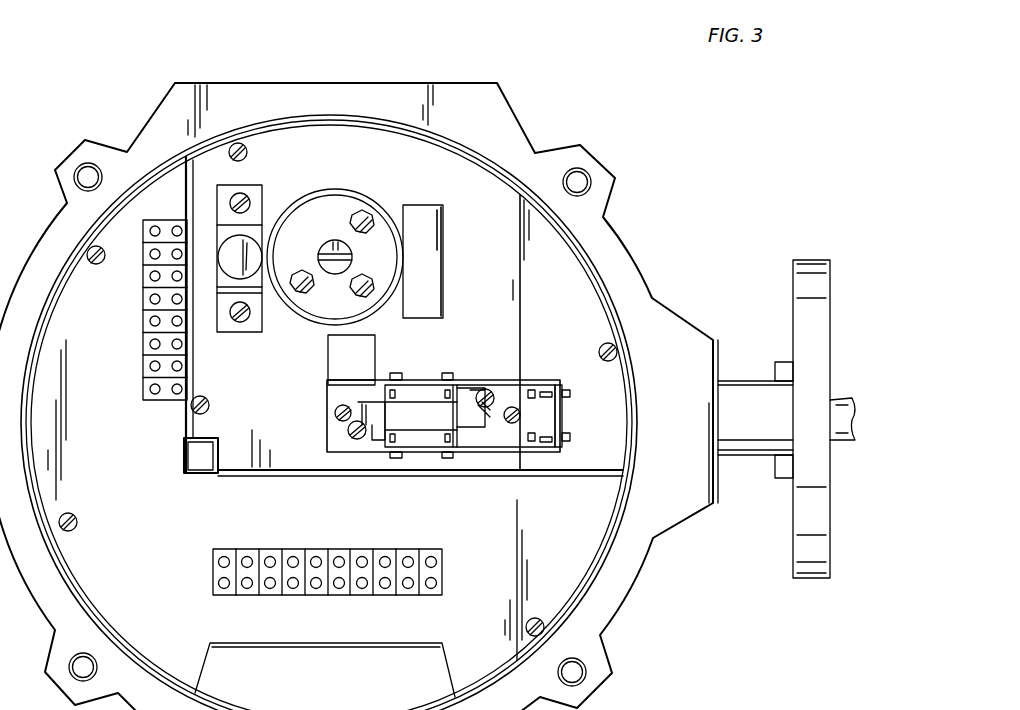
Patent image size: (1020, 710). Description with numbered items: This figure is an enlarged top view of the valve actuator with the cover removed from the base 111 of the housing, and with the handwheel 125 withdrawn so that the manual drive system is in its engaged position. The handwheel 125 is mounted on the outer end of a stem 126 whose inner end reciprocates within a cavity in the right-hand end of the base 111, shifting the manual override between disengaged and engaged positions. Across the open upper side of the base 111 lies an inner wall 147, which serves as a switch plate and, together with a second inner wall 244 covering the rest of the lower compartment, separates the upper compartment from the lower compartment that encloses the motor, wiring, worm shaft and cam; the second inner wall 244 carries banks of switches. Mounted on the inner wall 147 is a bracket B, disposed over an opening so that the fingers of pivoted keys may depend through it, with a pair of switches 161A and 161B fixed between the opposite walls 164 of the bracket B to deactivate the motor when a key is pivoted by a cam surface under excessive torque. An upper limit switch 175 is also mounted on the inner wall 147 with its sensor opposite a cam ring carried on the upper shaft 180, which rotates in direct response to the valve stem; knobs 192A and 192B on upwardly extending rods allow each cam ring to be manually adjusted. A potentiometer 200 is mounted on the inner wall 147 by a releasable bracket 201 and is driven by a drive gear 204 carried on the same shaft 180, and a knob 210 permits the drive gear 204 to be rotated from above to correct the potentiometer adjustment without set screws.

The base 111 is at (163, 91).
The handwheel 125 is at (793, 278).
The stem 126 is at (748, 463).
The inner wall 147 is at (490, 352).
The switch 161A is at (373, 440).
The switch 161B is at (478, 420).
The bracket B is at (425, 455).
The opposite walls of the bracket 164 is at (444, 423).
The upper limit switch 175 is at (444, 253).
The upper shaft 180 is at (311, 254).
The knob 192A is at (305, 298).
The knob 192B is at (362, 212).
The potentiometer 200 is at (253, 259).
The bracket 201 is at (236, 333).
The drive gear 204 is at (351, 207).
The knob 210 is at (367, 293).
The second inner wall 244 is at (173, 528).